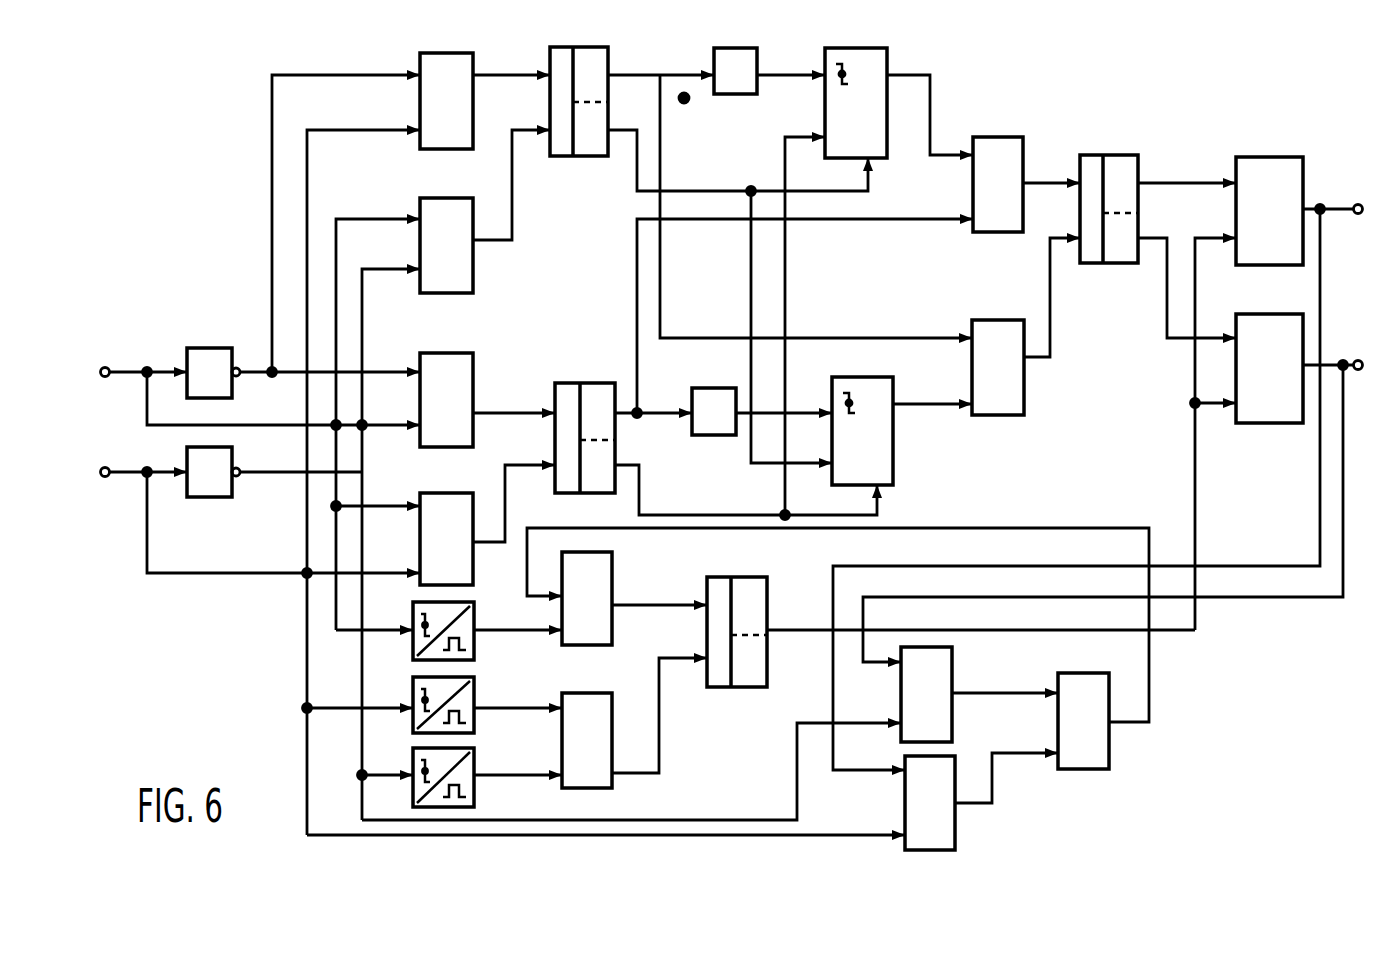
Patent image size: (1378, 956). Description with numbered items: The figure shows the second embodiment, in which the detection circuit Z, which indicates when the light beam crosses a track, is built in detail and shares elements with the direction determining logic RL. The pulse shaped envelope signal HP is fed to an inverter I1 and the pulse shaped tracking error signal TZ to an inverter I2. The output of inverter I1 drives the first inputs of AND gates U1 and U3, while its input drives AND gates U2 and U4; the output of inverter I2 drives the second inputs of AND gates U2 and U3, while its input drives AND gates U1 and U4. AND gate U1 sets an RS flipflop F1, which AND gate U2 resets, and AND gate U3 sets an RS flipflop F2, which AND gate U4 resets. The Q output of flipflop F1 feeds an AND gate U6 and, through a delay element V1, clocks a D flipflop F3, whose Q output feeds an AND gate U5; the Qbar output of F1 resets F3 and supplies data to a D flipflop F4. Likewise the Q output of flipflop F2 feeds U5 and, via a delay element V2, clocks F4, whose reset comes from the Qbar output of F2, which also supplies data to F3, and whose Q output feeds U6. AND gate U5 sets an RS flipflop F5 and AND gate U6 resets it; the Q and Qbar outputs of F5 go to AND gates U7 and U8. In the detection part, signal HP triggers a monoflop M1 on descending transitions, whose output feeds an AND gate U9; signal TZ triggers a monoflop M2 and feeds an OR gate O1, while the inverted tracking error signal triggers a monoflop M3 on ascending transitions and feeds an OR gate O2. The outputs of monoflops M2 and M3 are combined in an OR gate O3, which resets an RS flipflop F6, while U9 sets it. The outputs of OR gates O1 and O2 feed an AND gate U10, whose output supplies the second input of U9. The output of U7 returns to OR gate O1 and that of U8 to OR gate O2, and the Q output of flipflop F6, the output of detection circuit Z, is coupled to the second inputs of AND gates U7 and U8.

The pulse shaped envelope signal HP is at (259, 383).
The pulse shaped tracking error signal TZ is at (259, 523).
The inverter I1 is at (303, 354).
The inverter I2 is at (274, 491).
The direction determining logic RL is at (250, 228).
The detection circuit Z is at (148, 632).
The AND gate U1 is at (485, 86).
The AND gate U2 is at (485, 211).
The AND gate U3 is at (487, 384).
The AND gate U4 is at (487, 524).
The AND gate U5 is at (857, 261).
The AND gate U6 is at (1026, 345).
The AND gate U7 is at (1098, 447).
The AND gate U8 is at (1113, 488).
The AND gate U9 is at (634, 598).
The AND gate U10 is at (838, 669).
The RS flipflop F1 is at (761, 238).
The RS flipflop F2 is at (716, 435).
The D flipflop F3 is at (879, 264).
The D flipflop F4 is at (902, 414).
The RS flipflop F5 is at (1158, 231).
The RS flipflop F6 is at (951, 651).
The delay element V1 is at (752, 60).
The delay element V2 is at (762, 395).
The monoflop M1 is at (487, 628).
The monoflop M2 is at (487, 703).
The monoflop M3 is at (487, 779).
The OR gate O1 is at (981, 801).
The OR gate O2 is at (979, 694).
The OR gate O3 is at (634, 723).